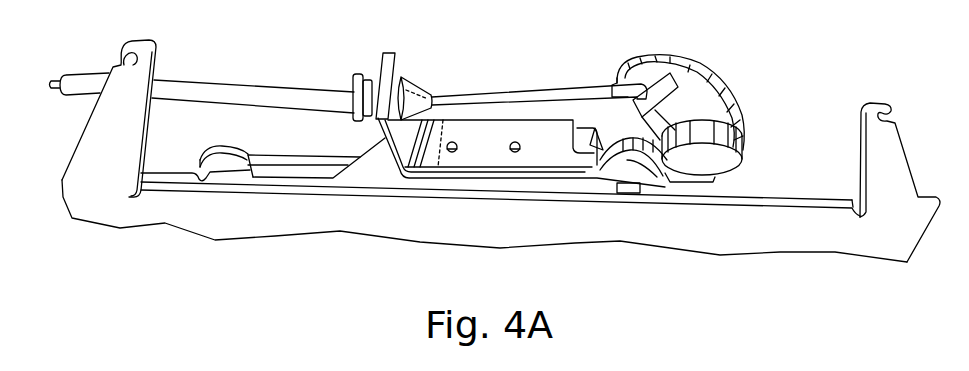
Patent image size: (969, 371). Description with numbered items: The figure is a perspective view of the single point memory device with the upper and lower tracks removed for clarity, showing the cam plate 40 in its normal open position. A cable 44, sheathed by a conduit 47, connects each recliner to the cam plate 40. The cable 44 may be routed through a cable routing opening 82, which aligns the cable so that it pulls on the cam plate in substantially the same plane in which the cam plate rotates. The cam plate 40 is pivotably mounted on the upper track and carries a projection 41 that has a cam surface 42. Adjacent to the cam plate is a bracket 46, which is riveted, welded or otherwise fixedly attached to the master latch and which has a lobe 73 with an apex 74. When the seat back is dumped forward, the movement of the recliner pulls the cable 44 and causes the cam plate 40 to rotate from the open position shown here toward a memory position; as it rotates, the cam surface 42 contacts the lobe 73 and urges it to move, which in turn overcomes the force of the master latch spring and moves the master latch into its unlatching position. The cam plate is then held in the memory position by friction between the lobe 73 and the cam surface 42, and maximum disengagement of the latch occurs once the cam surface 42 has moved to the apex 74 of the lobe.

The cam plate 40 is at (710, 97).
The projection 41 is at (719, 169).
The cam surface 42 is at (680, 178).
The cable 44 is at (517, 93).
The bracket 46 is at (502, 154).
The conduit 47 is at (242, 85).
The lobe 73 is at (590, 158).
The apex 74 is at (615, 140).
The cable routing opening 82 is at (416, 82).